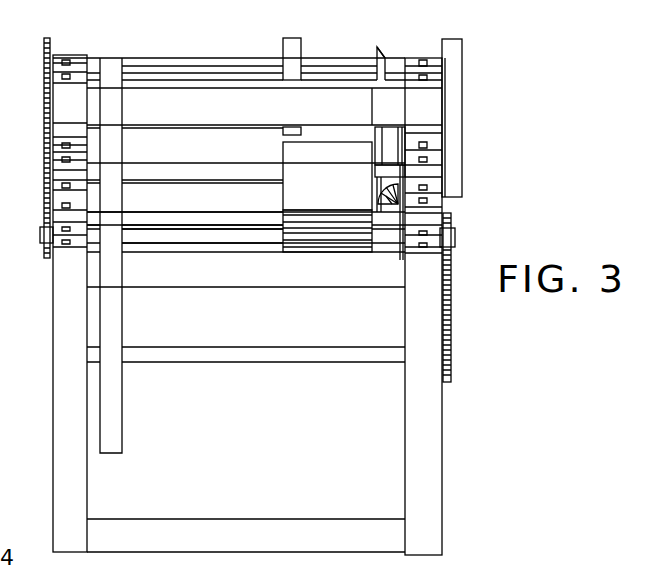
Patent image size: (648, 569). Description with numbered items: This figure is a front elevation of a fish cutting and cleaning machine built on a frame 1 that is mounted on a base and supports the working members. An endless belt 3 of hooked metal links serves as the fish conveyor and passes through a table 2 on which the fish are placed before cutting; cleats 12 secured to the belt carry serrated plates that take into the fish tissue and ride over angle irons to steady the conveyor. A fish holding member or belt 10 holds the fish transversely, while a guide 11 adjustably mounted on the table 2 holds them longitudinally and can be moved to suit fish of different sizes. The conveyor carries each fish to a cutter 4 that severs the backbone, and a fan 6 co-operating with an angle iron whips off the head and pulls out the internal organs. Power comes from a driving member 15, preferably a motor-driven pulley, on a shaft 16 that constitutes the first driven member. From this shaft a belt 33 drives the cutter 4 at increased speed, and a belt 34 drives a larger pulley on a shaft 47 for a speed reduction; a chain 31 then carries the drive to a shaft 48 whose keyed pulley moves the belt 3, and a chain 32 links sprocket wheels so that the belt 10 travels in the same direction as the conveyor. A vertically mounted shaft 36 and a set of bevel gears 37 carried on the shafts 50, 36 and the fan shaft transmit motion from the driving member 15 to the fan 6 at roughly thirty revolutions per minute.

The frame 1 is at (434, 437).
The table 2 is at (206, 221).
The endless belt 3 is at (283, 250).
The cutter 4 is at (390, 152).
The fan 6 is at (386, 200).
The fish holding member or belt 10 is at (327, 168).
The guide 11 is at (398, 196).
The cleats 12 is at (320, 216).
The driving member 15 is at (298, 50).
The shaft 16 is at (347, 86).
The chain 31 is at (451, 312).
The chain 32 is at (44, 143).
The belt 33 is at (462, 140).
The belt 34 is at (115, 337).
The shaft 36 is at (384, 106).
The bevel gears 37 is at (386, 57).
The shaft 47 is at (318, 357).
The shaft 48 is at (202, 239).
The shaft 50 is at (214, 80).